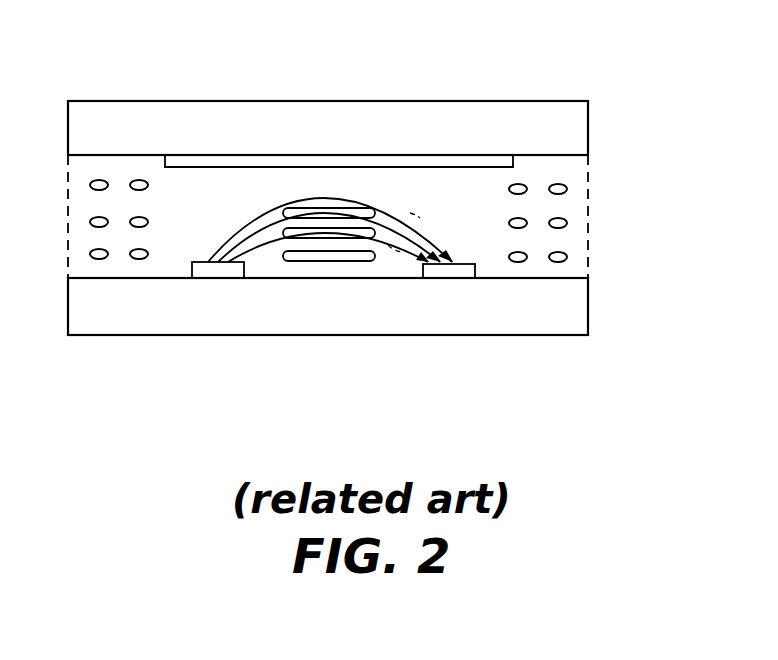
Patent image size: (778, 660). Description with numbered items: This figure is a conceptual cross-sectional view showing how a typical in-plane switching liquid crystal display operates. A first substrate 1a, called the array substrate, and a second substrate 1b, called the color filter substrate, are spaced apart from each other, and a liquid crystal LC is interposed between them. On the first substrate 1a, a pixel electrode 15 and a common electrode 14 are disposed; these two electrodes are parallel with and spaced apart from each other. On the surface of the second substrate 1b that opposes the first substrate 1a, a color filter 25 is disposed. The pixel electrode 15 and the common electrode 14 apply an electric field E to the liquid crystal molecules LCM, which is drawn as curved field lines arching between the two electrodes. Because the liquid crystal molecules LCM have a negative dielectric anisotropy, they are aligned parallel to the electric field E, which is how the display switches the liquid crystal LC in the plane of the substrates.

The first substrate 1a is at (523, 325).
The second substrate 1b is at (297, 118).
The common electrode 14 is at (458, 270).
The pixel electrode 15 is at (215, 272).
The color filter 25 is at (208, 160).
The electric field E is at (420, 219).
The liquid crystal LC is at (578, 215).
The liquid crystal molecules LCM is at (316, 258).